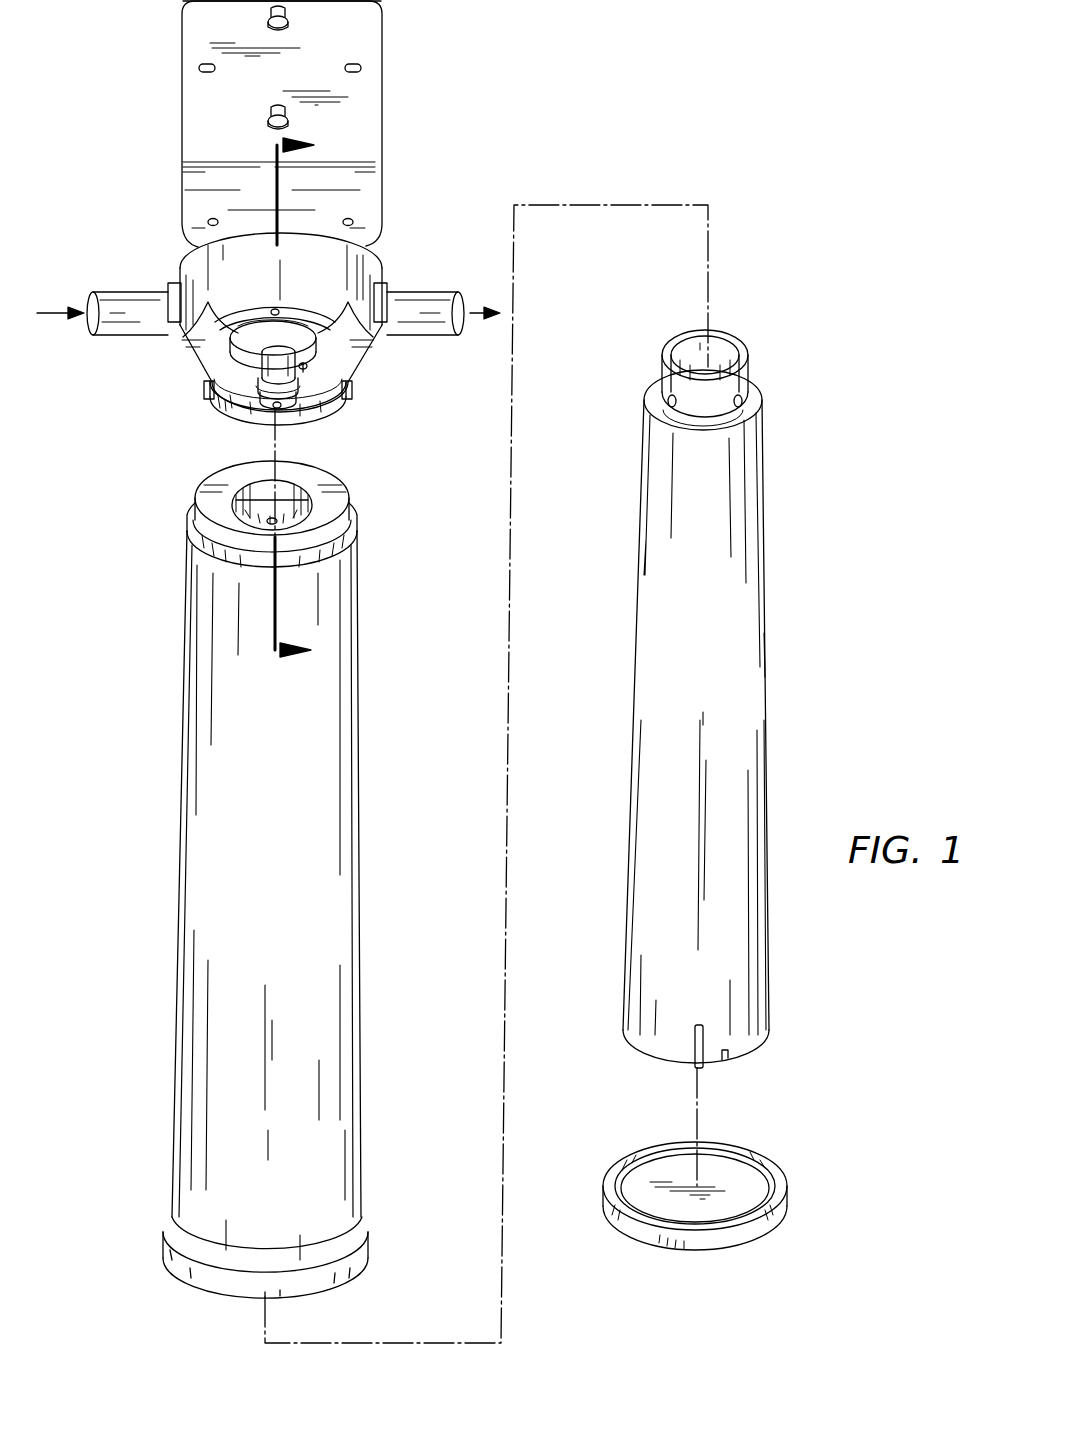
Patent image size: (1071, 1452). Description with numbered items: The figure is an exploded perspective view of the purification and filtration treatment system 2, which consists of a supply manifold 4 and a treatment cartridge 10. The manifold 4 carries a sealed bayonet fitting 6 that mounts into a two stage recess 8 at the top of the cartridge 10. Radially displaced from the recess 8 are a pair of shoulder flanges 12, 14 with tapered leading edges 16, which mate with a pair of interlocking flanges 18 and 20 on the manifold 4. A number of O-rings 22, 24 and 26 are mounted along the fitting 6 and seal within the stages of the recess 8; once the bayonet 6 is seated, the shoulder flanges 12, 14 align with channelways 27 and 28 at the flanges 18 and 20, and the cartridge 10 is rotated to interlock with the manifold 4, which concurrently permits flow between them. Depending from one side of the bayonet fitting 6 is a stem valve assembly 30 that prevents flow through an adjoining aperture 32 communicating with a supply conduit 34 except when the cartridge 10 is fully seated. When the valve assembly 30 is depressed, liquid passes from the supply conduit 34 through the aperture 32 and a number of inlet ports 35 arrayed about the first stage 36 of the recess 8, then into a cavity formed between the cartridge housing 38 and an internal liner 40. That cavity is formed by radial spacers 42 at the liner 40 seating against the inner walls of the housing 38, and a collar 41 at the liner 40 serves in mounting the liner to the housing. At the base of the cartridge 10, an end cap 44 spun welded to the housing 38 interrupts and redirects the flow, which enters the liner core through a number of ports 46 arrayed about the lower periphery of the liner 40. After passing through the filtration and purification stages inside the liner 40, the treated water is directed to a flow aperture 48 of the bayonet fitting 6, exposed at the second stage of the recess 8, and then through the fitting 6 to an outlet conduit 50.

The system 2 is at (426, 155).
The supply manifold 4 is at (178, 247).
The sealed bayonet fitting 6 is at (252, 368).
The two stage recess 8 is at (312, 498).
The treatment cartridge 10 is at (170, 718).
The shoulder flange 12 is at (223, 550).
The shoulder flange 14 is at (225, 470).
The tapered leading edges 16 is at (357, 552).
The interlocking flange 18 is at (330, 341).
The interlocking flange 20 is at (349, 397).
The O-ring 22 is at (291, 404).
The O-ring 24 is at (214, 401).
The O-ring 26 is at (318, 361).
The channelway 27 is at (172, 350).
The channelway 28 is at (244, 389).
The stem valve assembly 30 is at (300, 401).
The aperture 32 is at (322, 381).
The supply conduit 34 is at (117, 330).
The inlet ports 35 is at (315, 500).
The first stage 36 is at (228, 499).
The cartridge housing 38 is at (361, 721).
The internal liner 40 is at (629, 718).
The collar 41 is at (746, 345).
The radial spacers 42 is at (709, 1065).
The end cap 44 is at (612, 1222).
The ports 46 is at (725, 1058).
The flow aperture 48 is at (274, 410).
The outlet conduit 50 is at (405, 292).